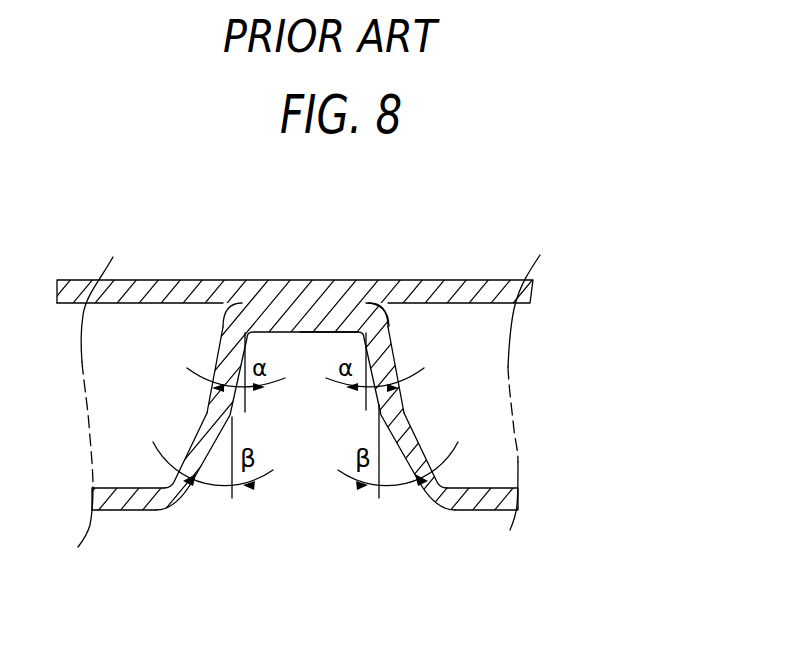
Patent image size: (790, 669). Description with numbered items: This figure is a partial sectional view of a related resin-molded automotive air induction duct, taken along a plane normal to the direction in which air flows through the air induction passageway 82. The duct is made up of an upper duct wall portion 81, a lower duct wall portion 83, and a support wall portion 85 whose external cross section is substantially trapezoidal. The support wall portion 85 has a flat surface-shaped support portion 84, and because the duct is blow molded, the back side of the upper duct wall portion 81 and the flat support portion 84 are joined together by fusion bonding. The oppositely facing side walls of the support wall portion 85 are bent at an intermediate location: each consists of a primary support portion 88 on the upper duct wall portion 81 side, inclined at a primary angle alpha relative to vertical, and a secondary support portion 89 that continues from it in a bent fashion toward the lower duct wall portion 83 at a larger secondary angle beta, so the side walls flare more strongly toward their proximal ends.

The upper duct wall portion 81 is at (527, 292).
The air induction passageway 82 is at (126, 316).
The lower duct wall portion 83 is at (520, 494).
The flat surface-shaped support portion 84 is at (264, 315).
The support wall portion 85 is at (405, 305).
The primary support portion 88 is at (226, 358).
The secondary support portion 89 is at (205, 435).